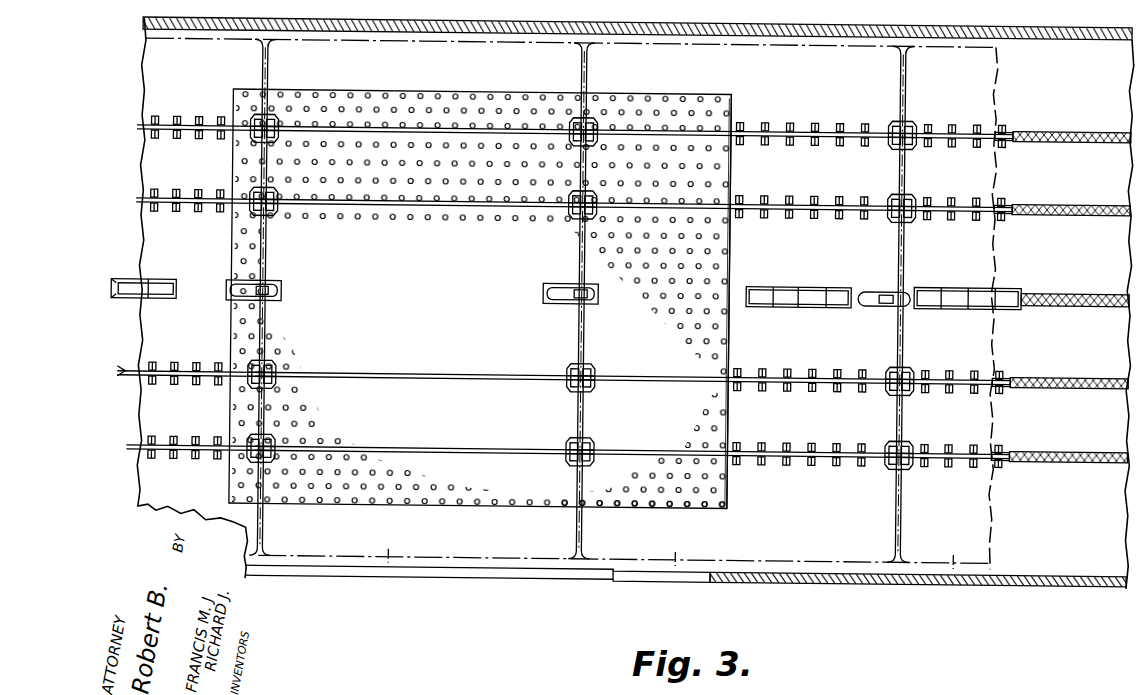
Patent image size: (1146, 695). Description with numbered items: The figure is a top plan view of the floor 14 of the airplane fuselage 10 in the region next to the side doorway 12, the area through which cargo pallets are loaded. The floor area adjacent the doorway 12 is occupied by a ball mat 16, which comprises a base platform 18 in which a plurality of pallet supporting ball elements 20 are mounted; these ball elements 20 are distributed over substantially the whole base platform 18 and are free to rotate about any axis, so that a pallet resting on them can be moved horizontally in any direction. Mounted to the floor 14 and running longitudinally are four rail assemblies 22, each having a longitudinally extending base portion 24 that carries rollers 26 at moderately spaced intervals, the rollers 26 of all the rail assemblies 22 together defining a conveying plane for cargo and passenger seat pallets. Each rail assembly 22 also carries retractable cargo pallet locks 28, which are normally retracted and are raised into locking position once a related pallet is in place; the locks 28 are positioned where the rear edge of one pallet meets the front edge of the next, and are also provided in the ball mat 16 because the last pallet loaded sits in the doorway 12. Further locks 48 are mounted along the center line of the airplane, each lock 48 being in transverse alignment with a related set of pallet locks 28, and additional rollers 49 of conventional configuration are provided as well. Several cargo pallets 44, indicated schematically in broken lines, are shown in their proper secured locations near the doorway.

The airplane fuselage 10 is at (805, 596).
The side doorway 12 is at (556, 580).
The floor 14 is at (612, 570).
The ball mat 16 is at (636, 84).
The base platform 18 is at (731, 110).
The pallet supporting ball elements 20 is at (452, 174).
The rail assembly 22 is at (760, 475).
The base portion 24 is at (833, 462).
The rollers 26 is at (798, 150).
The retractable cargo pallet locks 28 is at (252, 122).
The cargo pallets 44 is at (265, 575).
The locks 48 is at (594, 300).
The additional rollers 49 is at (800, 295).